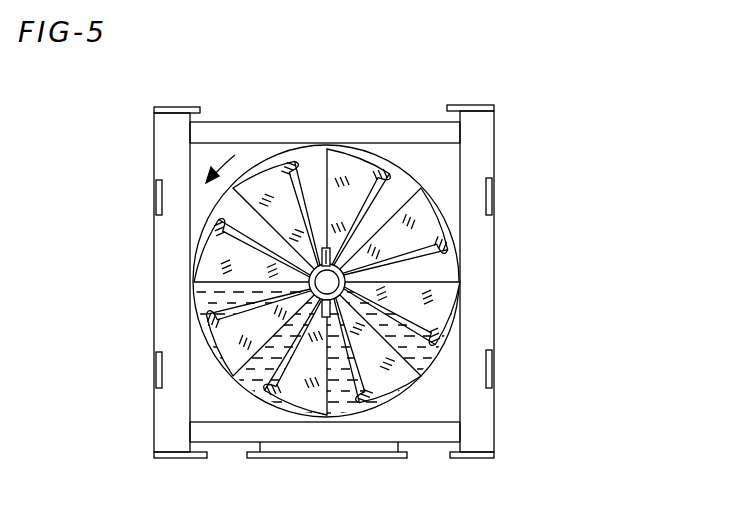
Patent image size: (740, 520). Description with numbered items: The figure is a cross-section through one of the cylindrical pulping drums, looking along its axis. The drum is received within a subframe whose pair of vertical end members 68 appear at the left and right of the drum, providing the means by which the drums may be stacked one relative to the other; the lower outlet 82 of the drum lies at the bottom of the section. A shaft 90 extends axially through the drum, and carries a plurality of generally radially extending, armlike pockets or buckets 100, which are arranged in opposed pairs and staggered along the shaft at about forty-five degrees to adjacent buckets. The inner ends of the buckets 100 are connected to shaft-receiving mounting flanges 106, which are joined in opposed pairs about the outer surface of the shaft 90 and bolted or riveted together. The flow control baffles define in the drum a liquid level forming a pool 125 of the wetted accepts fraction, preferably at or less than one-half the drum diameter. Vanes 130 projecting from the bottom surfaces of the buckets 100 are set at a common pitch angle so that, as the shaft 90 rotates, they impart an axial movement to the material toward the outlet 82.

The vertical end member 68 is at (167, 313).
The lower outlet 82 is at (383, 450).
The shaft 90 is at (224, 271).
The bucket 100 is at (357, 183).
The shaft-receiving mounting flange 106 is at (237, 350).
The pool 125 is at (212, 291).
The vane 130 is at (460, 252).